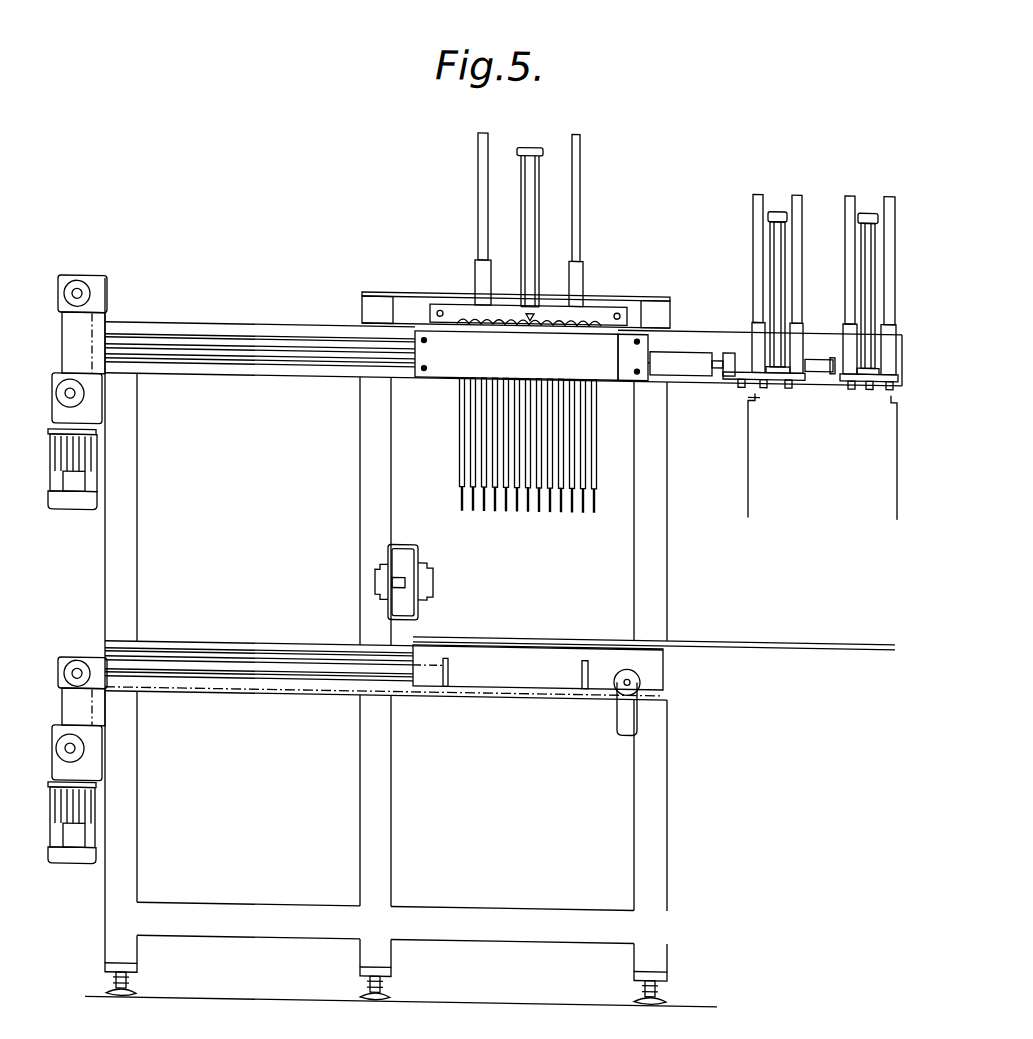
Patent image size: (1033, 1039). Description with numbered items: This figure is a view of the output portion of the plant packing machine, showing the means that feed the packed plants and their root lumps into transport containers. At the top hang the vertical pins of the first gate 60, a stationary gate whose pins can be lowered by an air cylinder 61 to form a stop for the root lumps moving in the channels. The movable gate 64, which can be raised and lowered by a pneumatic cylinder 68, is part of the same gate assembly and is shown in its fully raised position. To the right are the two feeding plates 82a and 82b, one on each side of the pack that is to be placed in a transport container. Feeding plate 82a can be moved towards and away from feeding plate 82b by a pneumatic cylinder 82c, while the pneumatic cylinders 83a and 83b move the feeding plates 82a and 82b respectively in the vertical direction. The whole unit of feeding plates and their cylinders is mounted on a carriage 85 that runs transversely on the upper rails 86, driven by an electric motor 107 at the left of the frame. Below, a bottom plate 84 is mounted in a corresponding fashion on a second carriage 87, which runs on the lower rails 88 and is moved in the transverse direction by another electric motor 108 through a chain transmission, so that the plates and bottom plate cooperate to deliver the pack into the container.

The first gate 60 is at (521, 467).
The movable gate 64 is at (460, 450).
The air cylinder 61 is at (601, 230).
The pneumatic cylinder 68 is at (537, 172).
The feeding plate 82a is at (748, 443).
The feeding plate 82b is at (897, 465).
The pneumatic cylinder 82c is at (687, 350).
The pneumatic cylinder 83a is at (778, 199).
The pneumatic cylinder 83b is at (872, 199).
The bottom plate 84 is at (749, 630).
The carriage 85 is at (697, 338).
The rails 86 is at (280, 320).
The carriage 87 is at (538, 666).
The rails 88 is at (259, 644).
The electric motor 107 is at (77, 499).
The electric motor 108 is at (43, 836).